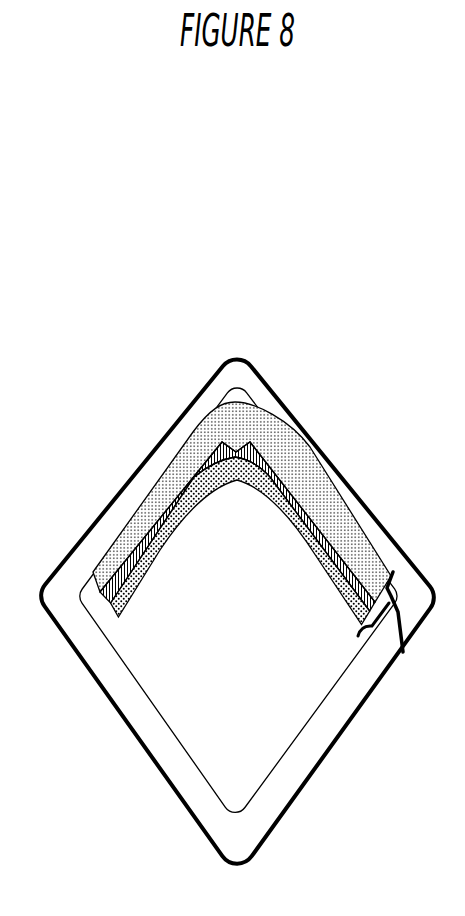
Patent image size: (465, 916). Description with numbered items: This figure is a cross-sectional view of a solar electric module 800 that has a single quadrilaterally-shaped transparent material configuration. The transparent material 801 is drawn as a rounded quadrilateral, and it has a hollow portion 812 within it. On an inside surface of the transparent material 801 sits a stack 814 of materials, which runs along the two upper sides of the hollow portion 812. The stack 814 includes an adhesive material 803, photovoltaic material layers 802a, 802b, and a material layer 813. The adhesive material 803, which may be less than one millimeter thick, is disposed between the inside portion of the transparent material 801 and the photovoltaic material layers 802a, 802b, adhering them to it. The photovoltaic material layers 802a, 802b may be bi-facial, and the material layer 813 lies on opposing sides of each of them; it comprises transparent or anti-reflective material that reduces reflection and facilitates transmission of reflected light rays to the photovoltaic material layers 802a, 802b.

The solar electric module 800 is at (97, 333).
The transparent material 801 is at (187, 812).
The photovoltaic material layer 802a is at (112, 606).
The photovoltaic material layer 802b is at (327, 537).
The adhesive material 803 is at (229, 609).
The hollow portion 812 is at (251, 650).
The material layer 813 is at (113, 612).
The stack 814 is at (397, 640).